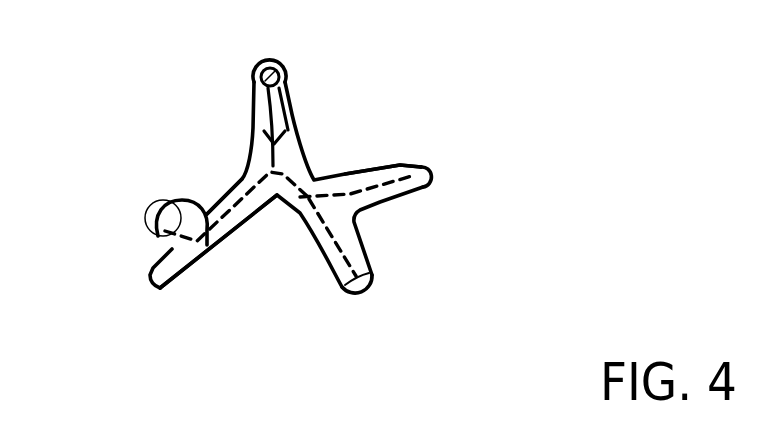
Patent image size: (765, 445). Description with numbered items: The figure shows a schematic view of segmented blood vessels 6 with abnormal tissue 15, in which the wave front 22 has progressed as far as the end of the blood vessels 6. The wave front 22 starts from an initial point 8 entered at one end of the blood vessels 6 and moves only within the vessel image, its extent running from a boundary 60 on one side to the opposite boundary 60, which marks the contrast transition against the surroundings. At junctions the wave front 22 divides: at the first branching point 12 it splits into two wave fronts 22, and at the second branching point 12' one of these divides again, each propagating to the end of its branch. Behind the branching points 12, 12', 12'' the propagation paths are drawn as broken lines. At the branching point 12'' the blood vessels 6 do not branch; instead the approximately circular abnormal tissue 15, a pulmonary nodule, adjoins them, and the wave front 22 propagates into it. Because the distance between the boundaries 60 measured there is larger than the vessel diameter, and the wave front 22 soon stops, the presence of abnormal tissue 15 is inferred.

The blood vessels 6 is at (430, 179).
The initial point 8 is at (283, 65).
The first branching point 12 is at (213, 164).
The second branching point 12' is at (356, 180).
The branching point 12'' is at (223, 253).
The abnormal tissue 15 is at (148, 212).
The wave front 22 is at (255, 96).
The boundary 60 is at (411, 162).